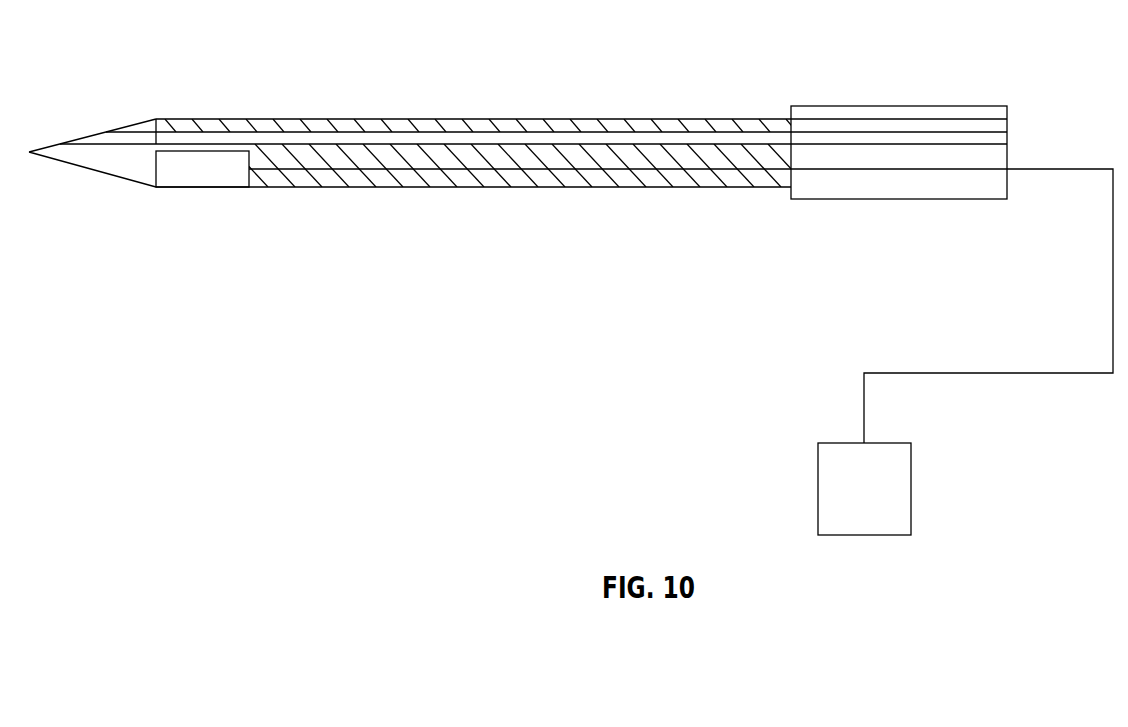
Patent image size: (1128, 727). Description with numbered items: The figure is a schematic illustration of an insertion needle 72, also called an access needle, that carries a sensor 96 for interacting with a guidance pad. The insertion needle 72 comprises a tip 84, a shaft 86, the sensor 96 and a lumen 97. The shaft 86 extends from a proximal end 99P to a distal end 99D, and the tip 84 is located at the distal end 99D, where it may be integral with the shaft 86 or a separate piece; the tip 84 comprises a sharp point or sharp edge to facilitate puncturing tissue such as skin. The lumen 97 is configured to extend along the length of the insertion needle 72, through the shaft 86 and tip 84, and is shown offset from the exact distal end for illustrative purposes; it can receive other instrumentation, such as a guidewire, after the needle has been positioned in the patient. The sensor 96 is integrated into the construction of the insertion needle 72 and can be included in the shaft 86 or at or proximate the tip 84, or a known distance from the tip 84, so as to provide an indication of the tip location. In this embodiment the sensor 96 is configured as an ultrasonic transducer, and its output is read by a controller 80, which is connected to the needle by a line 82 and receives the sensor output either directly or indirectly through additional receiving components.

The insertion needle 72 is at (371, 88).
The controller 80 is at (838, 537).
The conductor wire 82 is at (490, 170).
The tip 84 is at (93, 170).
The shaft 86 is at (367, 187).
The sensor 96 is at (203, 187).
The lumen 97 is at (483, 138).
The distal end 99D is at (184, 88).
The proximal end 99P is at (770, 84).